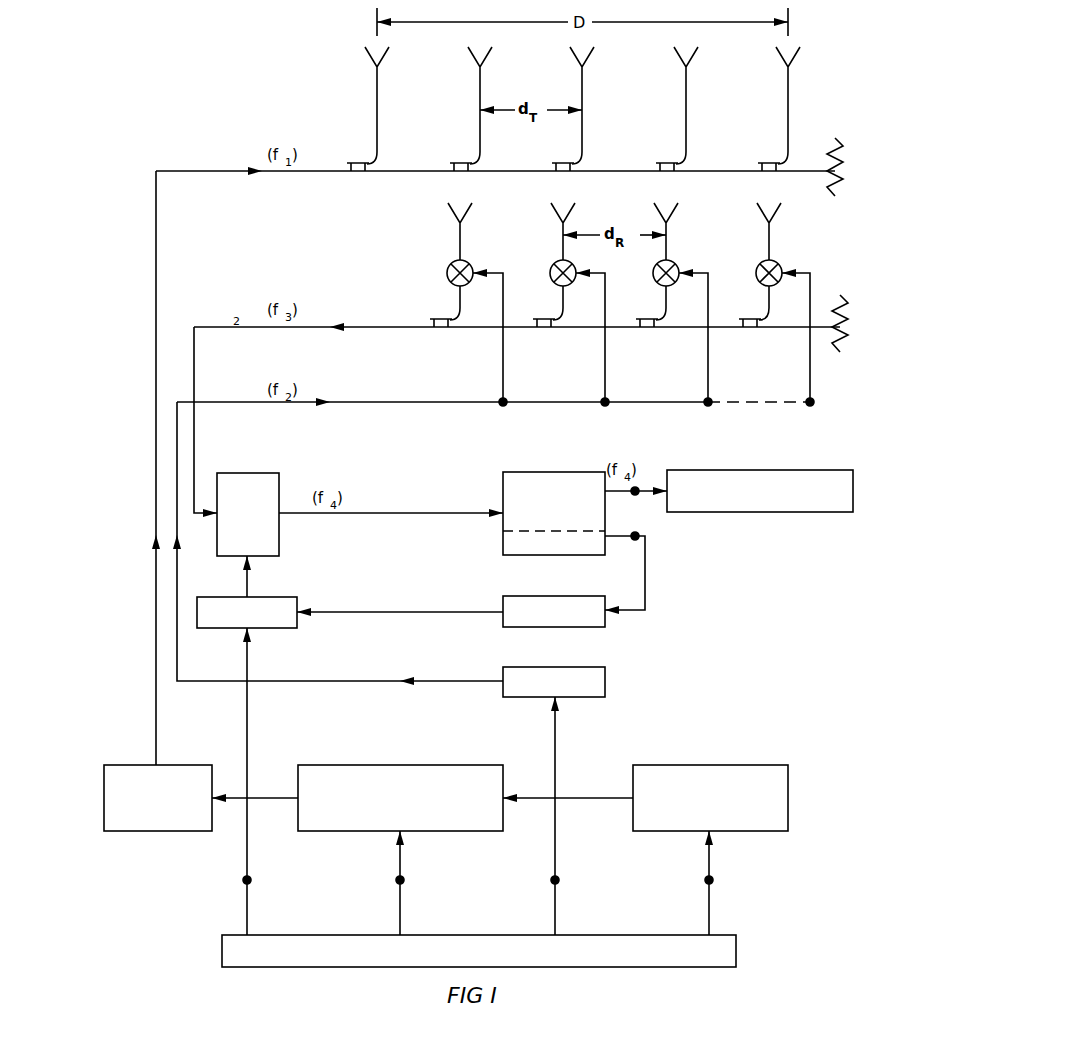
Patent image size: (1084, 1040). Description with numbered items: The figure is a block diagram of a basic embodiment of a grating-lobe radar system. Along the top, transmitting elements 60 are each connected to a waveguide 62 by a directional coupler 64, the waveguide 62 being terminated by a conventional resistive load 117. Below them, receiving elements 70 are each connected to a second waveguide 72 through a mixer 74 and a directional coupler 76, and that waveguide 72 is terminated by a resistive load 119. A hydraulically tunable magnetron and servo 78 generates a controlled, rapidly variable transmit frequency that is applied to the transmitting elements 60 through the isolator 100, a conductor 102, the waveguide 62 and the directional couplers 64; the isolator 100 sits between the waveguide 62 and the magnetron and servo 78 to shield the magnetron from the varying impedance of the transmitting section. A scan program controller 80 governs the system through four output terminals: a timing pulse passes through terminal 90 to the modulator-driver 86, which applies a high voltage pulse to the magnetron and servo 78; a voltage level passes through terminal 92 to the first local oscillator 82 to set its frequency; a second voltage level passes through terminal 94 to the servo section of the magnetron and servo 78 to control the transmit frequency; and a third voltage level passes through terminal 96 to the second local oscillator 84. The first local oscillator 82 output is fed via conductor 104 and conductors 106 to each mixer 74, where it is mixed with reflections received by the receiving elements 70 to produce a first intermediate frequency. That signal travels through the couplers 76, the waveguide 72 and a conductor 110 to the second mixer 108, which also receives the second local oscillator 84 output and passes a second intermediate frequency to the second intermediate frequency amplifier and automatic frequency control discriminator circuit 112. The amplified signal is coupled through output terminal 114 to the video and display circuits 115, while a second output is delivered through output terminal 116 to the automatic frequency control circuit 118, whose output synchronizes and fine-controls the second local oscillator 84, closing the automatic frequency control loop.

The transmitting elements 60 is at (478, 82).
The directional coupler 64 is at (371, 170).
The waveguide 62 is at (618, 173).
The resistive load 117 is at (832, 194).
The receiving elements 70 is at (561, 240).
The mixer 74 is at (554, 262).
The directional coupler 76 is at (454, 326).
The waveguide 72 is at (582, 330).
The resistive load 119 is at (838, 350).
The conductors 106 is at (504, 300).
The conductor 102 is at (157, 312).
The conductor 110 is at (195, 366).
The conductor 104 is at (178, 595).
The second mixer 108 is at (280, 488).
The second local oscillator 84 is at (276, 597).
The second intermediate frequency amplifier and automatic frequency control discrimi 112 is at (578, 472).
The output terminal 114 is at (637, 484).
The video and display circuits 115 is at (758, 470).
The output terminal 116 is at (634, 540).
The automatic frequency control circuit 118 is at (606, 621).
The first local oscillator 82 is at (606, 682).
The isolator 100 is at (193, 765).
The hydraulically tunable magnetron and servo 78 is at (407, 765).
The modulator-driver 86 is at (710, 765).
The output terminal 96 is at (250, 880).
The output terminal 94 is at (403, 880).
The output terminal 92 is at (558, 880).
The output terminal 90 is at (712, 880).
The scan program controller 80 is at (736, 948).